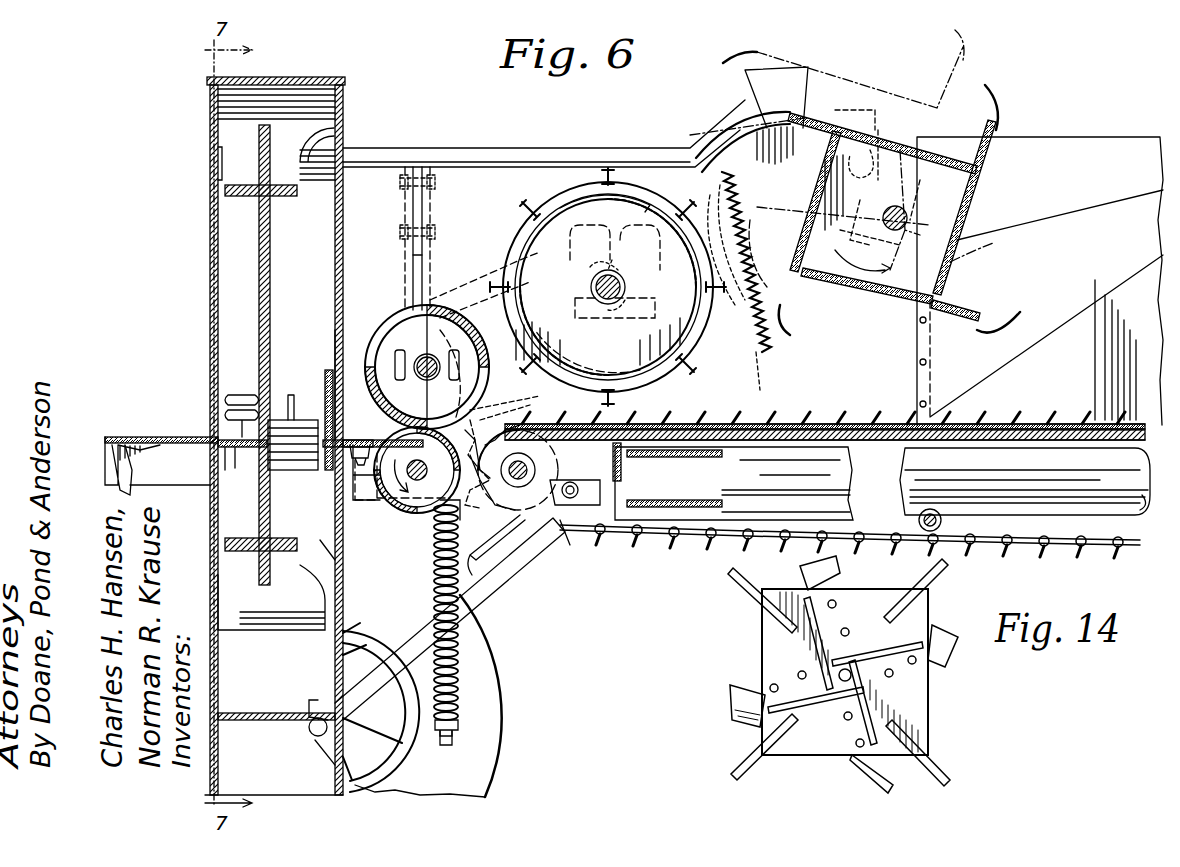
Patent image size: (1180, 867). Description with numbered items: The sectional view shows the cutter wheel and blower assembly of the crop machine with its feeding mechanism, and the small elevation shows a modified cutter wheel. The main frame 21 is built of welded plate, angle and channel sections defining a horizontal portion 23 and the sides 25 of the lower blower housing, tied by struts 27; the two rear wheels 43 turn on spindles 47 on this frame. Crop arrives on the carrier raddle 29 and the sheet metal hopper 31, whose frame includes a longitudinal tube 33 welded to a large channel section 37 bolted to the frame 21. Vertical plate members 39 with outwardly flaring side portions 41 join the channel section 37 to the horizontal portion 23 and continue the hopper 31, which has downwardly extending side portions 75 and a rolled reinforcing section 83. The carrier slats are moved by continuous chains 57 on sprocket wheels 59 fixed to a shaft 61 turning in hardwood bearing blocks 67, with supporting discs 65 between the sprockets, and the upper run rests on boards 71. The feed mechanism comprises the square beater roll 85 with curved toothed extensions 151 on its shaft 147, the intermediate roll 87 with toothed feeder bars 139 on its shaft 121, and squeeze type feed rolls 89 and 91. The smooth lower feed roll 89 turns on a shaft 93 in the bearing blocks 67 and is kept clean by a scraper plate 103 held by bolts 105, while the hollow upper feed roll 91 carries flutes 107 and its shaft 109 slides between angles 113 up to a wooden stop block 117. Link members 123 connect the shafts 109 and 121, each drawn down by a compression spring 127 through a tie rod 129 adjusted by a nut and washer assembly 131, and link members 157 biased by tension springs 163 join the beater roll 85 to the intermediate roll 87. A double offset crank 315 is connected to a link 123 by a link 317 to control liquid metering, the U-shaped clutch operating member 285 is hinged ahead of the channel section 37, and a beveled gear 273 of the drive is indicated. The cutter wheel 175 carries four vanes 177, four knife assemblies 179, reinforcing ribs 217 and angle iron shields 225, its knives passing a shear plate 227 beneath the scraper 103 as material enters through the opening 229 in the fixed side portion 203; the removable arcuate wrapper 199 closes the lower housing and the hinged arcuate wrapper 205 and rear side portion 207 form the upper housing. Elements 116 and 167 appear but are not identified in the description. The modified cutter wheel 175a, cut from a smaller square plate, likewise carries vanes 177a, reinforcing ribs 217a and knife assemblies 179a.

In FIG. 6, the main frame 21 is at (110, 440).
In FIG. 6, the horizontal portion 23 is at (165, 437).
In FIG. 6, the sides of lower half of blower housing 25 is at (208, 495).
In FIG. 6, the struts 27 is at (492, 582).
In FIG. 6, the carrier raddle 29 is at (996, 424).
In FIG. 6, the hopper 31 is at (1128, 354).
In FIG. 6, the tube 33 is at (775, 495).
In FIG. 6, the channel section 37 is at (640, 458).
In FIG. 6, the plate members 39 is at (495, 160).
In FIG. 6, the outwardly flaring side portions 41 is at (880, 350).
In FIG. 6, the rear wheels 43 is at (502, 750).
In FIG. 6, the spindles 47 is at (313, 735).
In FIG. 6, the chains 57 is at (996, 542).
In FIG. 6, the sprocket wheels 59 is at (514, 467).
In FIG. 6, the sprocket shaft 61 is at (535, 470).
In FIG. 6, the supporting discs 65 is at (570, 480).
In FIG. 6, the bearing blocks 67 is at (380, 500).
In FIG. 6, the boards 71 is at (1048, 424).
In FIG. 6, the side portions of hopper 75 is at (1125, 384).
In FIG. 6, the rolled reinforcing section 83 is at (1100, 137).
In FIG. 6, the beater roll 85 is at (965, 208).
In FIG. 6, the intermediate roll 87 is at (610, 250).
In FIG. 6, the lower feed roll 89 is at (408, 513).
In FIG. 6, the upper feed roll 91 is at (395, 306).
In FIG. 6, the shaft 93 is at (436, 466).
In FIG. 6, the scraper plate 103 is at (380, 440).
In FIG. 6, the bolts 105 is at (360, 438).
In FIG. 6, the ribs or flutes 107 is at (440, 308).
In FIG. 6, the upper feed roll shaft 109 is at (418, 356).
In FIG. 6, the angles 113 is at (406, 256).
In FIG. 6, the bar 116 is at (418, 275).
In FIG. 6, the block of wood 117 is at (435, 215).
In FIG. 6, the intermediate roll shaft 121 is at (602, 268).
In FIG. 6, the link members 123 is at (550, 286).
In FIG. 6, the compression spring 127 is at (458, 652).
In FIG. 6, the tie rod 129 is at (480, 405).
In FIG. 6, the nut and washer assembly 131 is at (458, 726).
In FIG. 6, the toothed feeder bars 139 is at (590, 196).
In FIG. 6, the beater roll shaft 147 is at (907, 218).
In FIG. 6, the toothed extensions 151 is at (760, 108).
In FIG. 6, the link members 157 is at (735, 130).
In FIG. 6, the tension springs 163 is at (748, 358).
In FIG. 6, the link 167 is at (490, 248).
In FIG. 6, the cutter wheel 175 is at (259, 305).
In FIG. 6, the vanes 177 is at (318, 130).
In FIG. 6, the knife assemblies 179 is at (325, 375).
In FIG. 6, the arcuate wrapper 199 is at (258, 713).
In FIG. 6, the side portion 203 is at (343, 214).
In FIG. 6, the arcuate wrapper 205 is at (312, 77).
In FIG. 6, the rear side portion 207 is at (210, 256).
In FIG. 6, the reinforcing ribs 217 is at (235, 455).
In FIG. 6, the angle iron shields 225 is at (295, 470).
In FIG. 6, the shear plate 227 is at (355, 440).
In FIG. 6, the opening 229 is at (335, 330).
In FIG. 6, the beveled gear 273 is at (292, 395).
In FIG. 6, the operating member 285 is at (941, 520).
In FIG. 6, the crank member 315 is at (565, 530).
In FIG. 6, the link 317 is at (509, 408).
In FIG. 14, the modified cutter wheel 175a is at (910, 696).
In FIG. 14, the vanes 177a is at (755, 600).
In FIG. 14, the knife assemblies 179a is at (825, 575).
In FIG. 14, the reinforcing ribs 217a is at (822, 643).